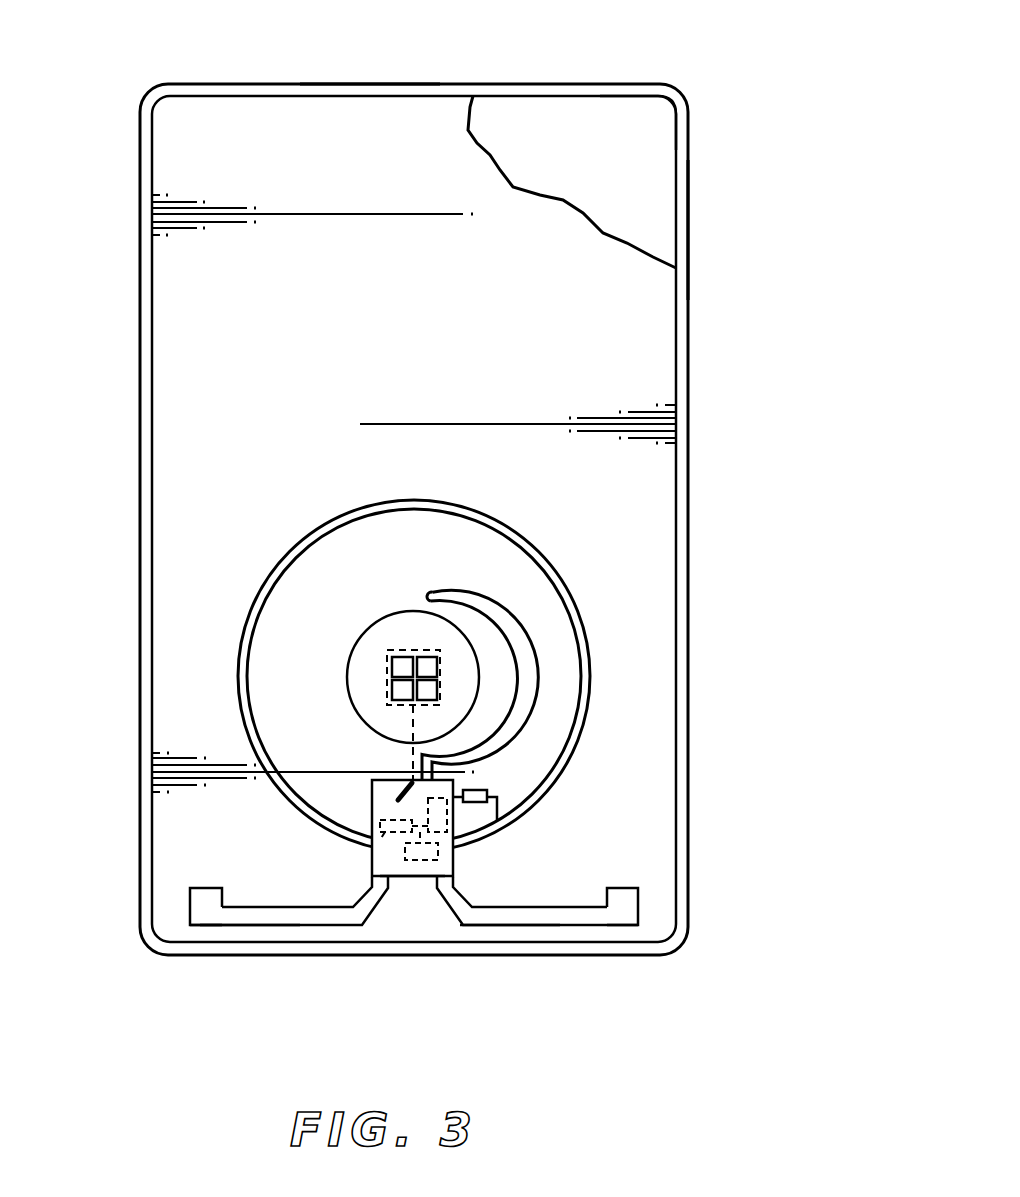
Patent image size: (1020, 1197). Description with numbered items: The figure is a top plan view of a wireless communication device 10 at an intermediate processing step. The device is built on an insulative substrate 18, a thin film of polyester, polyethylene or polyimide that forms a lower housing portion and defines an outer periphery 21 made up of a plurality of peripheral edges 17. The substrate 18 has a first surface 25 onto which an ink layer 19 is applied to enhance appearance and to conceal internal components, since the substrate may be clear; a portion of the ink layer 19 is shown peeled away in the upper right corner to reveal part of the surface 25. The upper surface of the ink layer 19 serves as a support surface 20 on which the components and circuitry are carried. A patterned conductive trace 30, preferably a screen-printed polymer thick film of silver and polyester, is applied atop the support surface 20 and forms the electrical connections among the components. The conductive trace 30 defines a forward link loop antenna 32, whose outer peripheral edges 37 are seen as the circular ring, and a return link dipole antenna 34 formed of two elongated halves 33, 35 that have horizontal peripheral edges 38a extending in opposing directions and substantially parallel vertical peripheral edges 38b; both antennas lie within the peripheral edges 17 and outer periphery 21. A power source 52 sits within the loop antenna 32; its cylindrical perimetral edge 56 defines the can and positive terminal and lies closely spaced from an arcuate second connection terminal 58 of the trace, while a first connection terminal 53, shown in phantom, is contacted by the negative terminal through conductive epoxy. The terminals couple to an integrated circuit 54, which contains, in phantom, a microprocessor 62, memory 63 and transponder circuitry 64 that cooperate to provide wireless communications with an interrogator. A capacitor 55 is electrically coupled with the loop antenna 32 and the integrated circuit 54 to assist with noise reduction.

The wireless communication device 10 is at (460, 514).
The peripheral edges 17 is at (285, 83).
The substrate 18 is at (368, 83).
The ink layer 19 is at (496, 145).
The support surface 20 is at (433, 358).
The outer periphery 21 is at (698, 224).
The support surface of substrate 25 is at (615, 168).
The conductive trace 30 is at (422, 744).
The loop antenna 32 is at (552, 548).
The first half of dipole antenna 33 is at (258, 918).
The dipole antenna 34 is at (232, 940).
The second half of dipole antenna 35 is at (557, 915).
The outer peripheral edges 37 is at (283, 558).
The horizontal peripheral edges 38a is at (307, 927).
The vertical peripheral edges 38b is at (188, 903).
The power source 52 is at (429, 662).
The first connection terminal 53 is at (440, 672).
The integrated circuit 54 is at (416, 906).
The capacitor 55 is at (478, 792).
The perimetral edge 56 is at (350, 655).
The second connection terminal 58 is at (487, 622).
The microprocessor 62 is at (417, 878).
The memory 63 is at (458, 848).
The transponder circuitry 64 is at (368, 853).